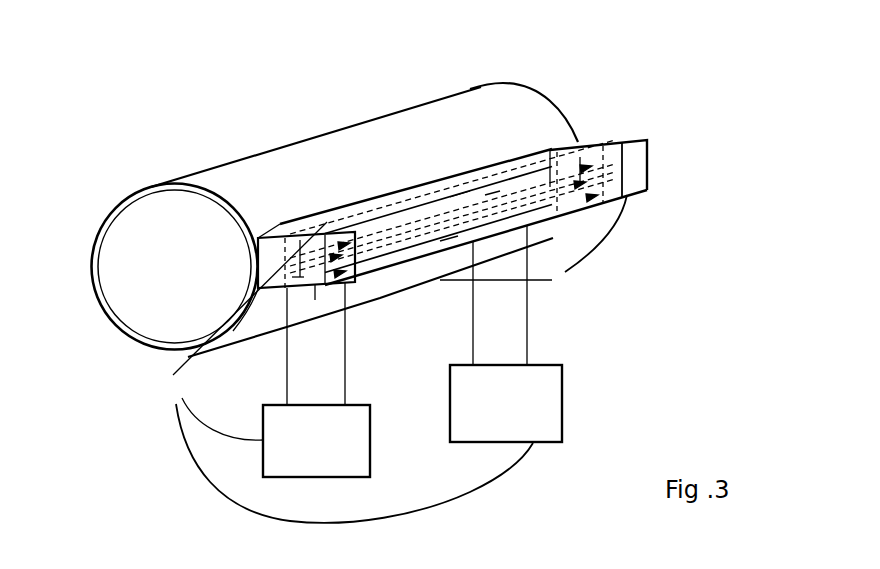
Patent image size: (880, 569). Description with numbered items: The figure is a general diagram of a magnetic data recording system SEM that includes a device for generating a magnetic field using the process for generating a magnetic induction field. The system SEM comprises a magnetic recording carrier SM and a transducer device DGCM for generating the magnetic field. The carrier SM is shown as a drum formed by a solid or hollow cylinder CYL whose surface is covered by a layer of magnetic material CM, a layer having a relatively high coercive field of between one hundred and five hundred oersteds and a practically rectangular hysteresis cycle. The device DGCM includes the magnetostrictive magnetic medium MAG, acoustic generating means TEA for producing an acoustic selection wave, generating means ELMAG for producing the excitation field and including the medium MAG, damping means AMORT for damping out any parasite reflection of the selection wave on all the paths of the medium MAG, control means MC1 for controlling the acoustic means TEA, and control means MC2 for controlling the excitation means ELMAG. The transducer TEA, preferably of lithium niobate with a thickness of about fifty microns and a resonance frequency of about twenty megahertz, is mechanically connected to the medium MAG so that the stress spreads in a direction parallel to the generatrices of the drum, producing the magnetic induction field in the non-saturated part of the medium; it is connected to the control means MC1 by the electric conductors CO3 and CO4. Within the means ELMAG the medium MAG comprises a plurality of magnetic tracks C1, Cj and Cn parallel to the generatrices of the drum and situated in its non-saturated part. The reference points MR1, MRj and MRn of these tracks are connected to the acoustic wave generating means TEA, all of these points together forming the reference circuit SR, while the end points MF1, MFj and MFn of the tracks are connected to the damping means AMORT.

The cylinder CYL is at (101, 258).
The layer of magnetic material CM is at (124, 212).
The magnetic recording carrier SM is at (378, 120).
The acoustic generating means TEA is at (288, 214).
The reference point MRn is at (345, 242).
The reference point MRj is at (300, 262).
The reference point MR1 is at (347, 283).
The reference circuit SR is at (315, 299).
The generating means for the excitation field ELMAG is at (410, 202).
The magnetic medium MAG is at (484, 182).
The magnetic track Cj is at (462, 216).
The magnetic track Cn is at (492, 193).
The magnetic track C1 is at (448, 238).
The damping means AMORT is at (620, 140).
The end point MFn is at (590, 168).
The end point MFj is at (583, 177).
The end point MF1 is at (623, 197).
The transducer device DGCM is at (562, 222).
The data recording system SEM is at (195, 360).
The electric conductor CO3 is at (287, 374).
The electric conductor CO4 is at (345, 343).
The control means MC1 is at (316, 441).
The control means MC2 is at (506, 333).